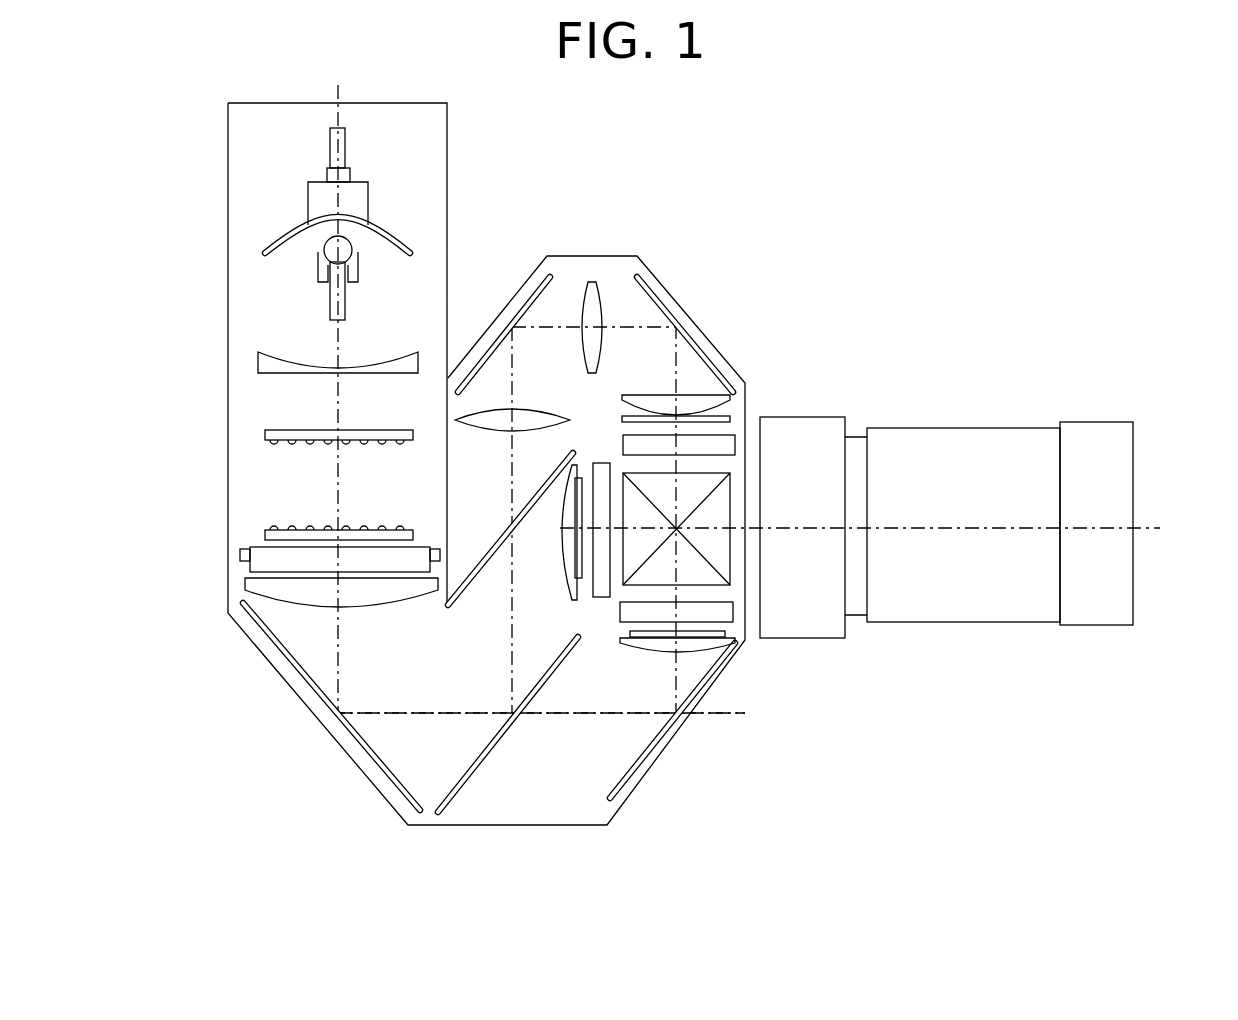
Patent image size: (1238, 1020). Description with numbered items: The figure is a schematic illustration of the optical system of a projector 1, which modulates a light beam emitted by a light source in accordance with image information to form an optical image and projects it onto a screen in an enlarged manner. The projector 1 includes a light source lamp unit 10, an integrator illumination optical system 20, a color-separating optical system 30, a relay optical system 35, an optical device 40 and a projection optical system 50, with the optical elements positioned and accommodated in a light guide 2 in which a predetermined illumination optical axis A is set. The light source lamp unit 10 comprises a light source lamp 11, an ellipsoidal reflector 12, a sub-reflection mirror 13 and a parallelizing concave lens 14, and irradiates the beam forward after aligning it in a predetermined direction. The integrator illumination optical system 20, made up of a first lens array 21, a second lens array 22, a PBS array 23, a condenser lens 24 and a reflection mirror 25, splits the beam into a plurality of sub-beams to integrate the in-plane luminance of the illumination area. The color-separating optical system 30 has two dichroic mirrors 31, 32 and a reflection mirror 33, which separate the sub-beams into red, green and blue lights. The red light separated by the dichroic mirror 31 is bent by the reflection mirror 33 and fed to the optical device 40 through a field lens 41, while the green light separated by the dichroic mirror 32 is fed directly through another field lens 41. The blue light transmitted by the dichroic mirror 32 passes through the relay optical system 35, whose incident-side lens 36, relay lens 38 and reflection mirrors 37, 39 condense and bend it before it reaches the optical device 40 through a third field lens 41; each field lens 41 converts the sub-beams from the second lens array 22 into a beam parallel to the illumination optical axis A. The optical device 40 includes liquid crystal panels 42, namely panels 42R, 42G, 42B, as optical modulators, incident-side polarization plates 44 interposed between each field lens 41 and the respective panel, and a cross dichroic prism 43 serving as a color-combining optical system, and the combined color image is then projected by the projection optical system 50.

The projector 1 is at (945, 237).
The light guide 2 is at (700, 330).
The light source lamp unit 10 is at (268, 208).
The light source lamp 11 is at (318, 255).
The ellipsoidal reflector 12 is at (265, 253).
The sub-reflection mirror 13 is at (313, 280).
The parallelizing concave lens 14 is at (258, 362).
The integrator illumination optical system 20 is at (290, 484).
The first lens array 21 is at (265, 437).
The second lens array 22 is at (265, 535).
The PBS array 23 is at (250, 568).
The condenser lens 24 is at (245, 585).
The reflection mirror 25 is at (318, 703).
The color-separating optical system 30 is at (548, 768).
The dichroic mirror 31 is at (472, 775).
The dichroic mirror 32 is at (470, 585).
The reflection mirror 33 is at (655, 748).
The relay optical system 35 is at (612, 292).
The incident-side lens 36 is at (500, 410).
The reflection mirror 37 is at (535, 285).
The relay lens 38 is at (592, 283).
The reflection mirror 39 is at (655, 285).
The optical device 40 is at (733, 630).
The field lens 41 is at (655, 395).
The liquid crystal panel 42 is at (733, 524).
The liquid crystal panel 42G is at (600, 462).
The liquid crystal panel 42B is at (735, 435).
The liquid crystal panel 42R is at (733, 608).
The cross dichroic prism 43 is at (728, 490).
The incident-side polarization plate 44 is at (727, 417).
The projection optical system 50 is at (980, 393).
The illumination optical axis A is at (430, 710).